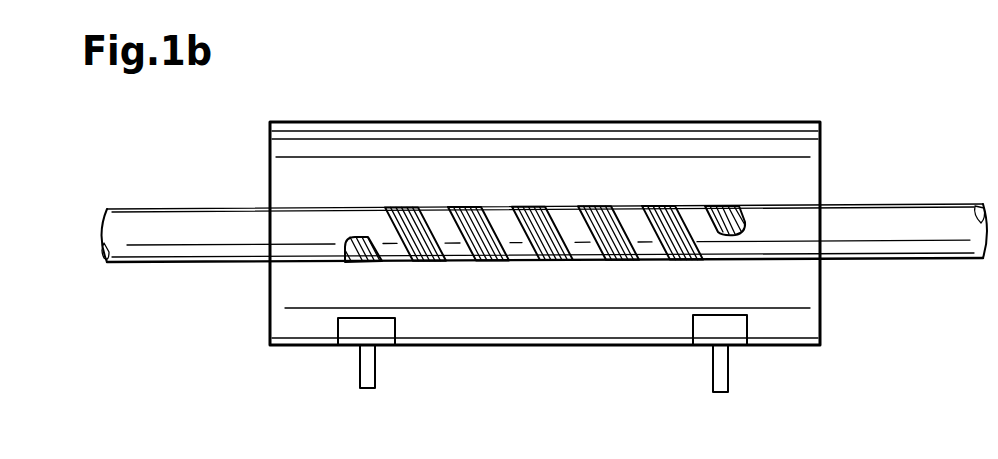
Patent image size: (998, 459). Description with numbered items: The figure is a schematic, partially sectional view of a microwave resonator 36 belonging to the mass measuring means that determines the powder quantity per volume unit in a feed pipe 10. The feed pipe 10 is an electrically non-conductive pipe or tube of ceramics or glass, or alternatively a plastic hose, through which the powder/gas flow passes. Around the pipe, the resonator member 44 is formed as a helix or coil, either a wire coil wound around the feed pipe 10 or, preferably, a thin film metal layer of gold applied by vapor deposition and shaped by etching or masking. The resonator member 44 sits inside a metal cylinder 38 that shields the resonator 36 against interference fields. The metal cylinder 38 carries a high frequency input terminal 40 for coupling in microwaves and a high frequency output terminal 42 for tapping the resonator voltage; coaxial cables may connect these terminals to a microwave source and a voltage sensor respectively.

The feed pipe 10 is at (186, 220).
The microwave resonator 36 is at (502, 110).
The metal cylinder 38 is at (666, 122).
The high frequency input terminal 40 is at (365, 372).
The high frequency output terminal 42 is at (722, 370).
The resonator member 44 is at (567, 262).